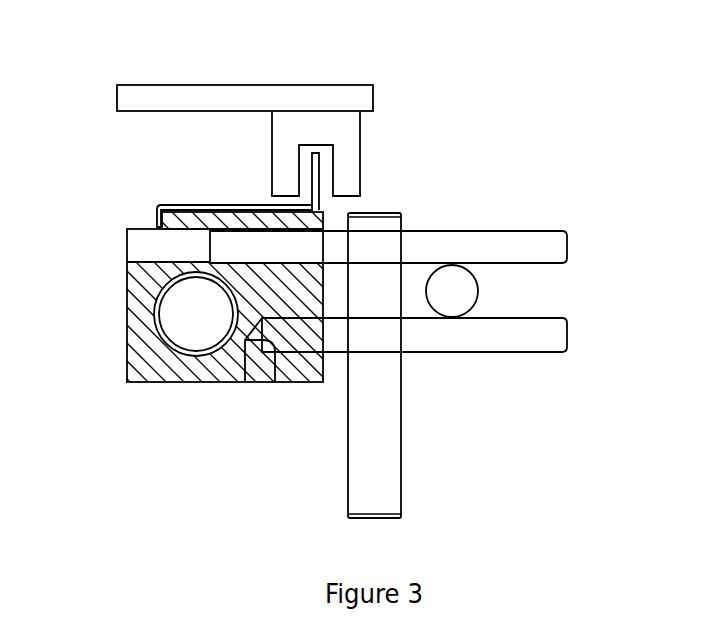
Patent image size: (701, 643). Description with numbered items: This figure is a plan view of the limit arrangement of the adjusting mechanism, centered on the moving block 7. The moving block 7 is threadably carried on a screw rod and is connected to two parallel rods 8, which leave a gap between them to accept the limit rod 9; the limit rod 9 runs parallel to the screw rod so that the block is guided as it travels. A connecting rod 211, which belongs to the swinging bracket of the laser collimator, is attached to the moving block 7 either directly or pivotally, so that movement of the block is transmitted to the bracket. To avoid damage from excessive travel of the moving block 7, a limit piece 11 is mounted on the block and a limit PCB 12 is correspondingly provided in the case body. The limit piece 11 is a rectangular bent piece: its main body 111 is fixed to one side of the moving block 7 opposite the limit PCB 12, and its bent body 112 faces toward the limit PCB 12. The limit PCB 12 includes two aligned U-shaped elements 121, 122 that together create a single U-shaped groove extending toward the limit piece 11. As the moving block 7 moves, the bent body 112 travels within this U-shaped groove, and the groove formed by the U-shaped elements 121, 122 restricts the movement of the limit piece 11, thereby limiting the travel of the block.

The limit PCB 12 is at (317, 103).
The U-shaped element 121 is at (395, 129).
The U-shaped element 122 is at (347, 158).
The limit piece 11 is at (255, 186).
The main body 111 is at (228, 210).
The bent body 112 is at (322, 189).
The moving block 7 is at (140, 334).
The parallel rods 8 is at (538, 248).
The limit rod 9 is at (458, 304).
The connecting rod 211 is at (385, 453).